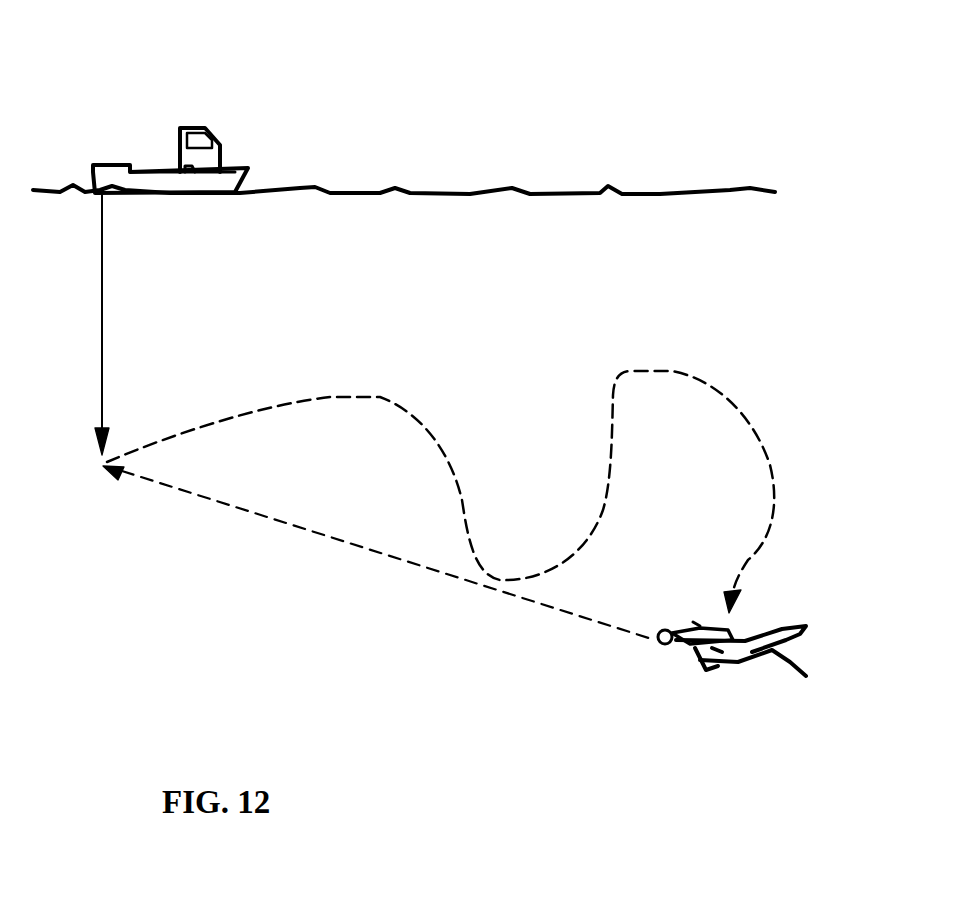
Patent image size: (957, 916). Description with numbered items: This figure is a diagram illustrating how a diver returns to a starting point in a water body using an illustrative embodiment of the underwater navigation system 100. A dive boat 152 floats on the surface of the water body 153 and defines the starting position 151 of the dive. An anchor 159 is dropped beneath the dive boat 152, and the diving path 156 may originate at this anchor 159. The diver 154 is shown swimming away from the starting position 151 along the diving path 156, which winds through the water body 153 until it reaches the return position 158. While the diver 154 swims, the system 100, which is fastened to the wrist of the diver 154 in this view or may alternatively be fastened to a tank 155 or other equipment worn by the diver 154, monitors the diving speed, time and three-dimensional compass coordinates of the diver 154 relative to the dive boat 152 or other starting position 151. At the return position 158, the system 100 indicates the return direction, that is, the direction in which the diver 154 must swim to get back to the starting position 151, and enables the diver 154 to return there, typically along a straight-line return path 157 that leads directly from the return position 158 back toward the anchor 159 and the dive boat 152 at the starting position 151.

The underwater navigation system 100 is at (685, 680).
The starting position 151 is at (285, 127).
The dive boat 152 is at (152, 172).
The water body 153 is at (608, 185).
The diver 154 is at (720, 648).
The tank 155 is at (695, 622).
The diving path 156 is at (641, 370).
The return path 157 is at (313, 530).
The return position 158 is at (812, 602).
The anchor 159 is at (105, 417).